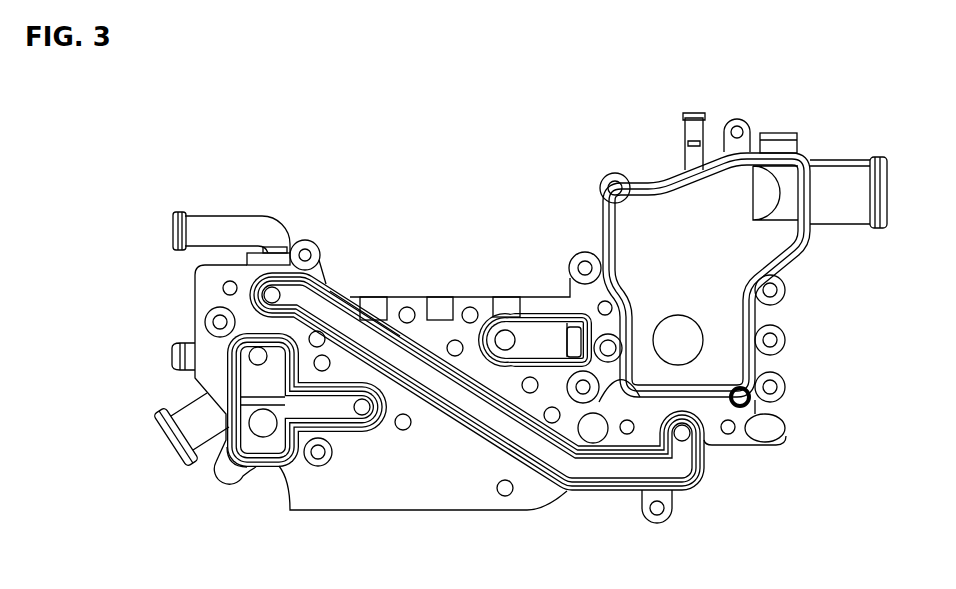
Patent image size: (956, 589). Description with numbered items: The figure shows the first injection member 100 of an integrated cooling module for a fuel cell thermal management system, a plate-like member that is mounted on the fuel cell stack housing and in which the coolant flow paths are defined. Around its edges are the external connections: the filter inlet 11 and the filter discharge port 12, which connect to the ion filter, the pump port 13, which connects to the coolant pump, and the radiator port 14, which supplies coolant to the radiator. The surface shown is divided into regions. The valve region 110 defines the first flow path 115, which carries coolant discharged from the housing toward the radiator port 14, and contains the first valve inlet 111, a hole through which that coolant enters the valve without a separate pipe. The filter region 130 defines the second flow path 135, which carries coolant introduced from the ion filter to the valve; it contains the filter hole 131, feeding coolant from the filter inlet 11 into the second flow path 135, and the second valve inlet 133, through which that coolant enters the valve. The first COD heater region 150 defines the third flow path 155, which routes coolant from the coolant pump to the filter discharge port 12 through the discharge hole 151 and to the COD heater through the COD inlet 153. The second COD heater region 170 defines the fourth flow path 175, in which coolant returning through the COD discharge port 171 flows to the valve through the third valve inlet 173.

The filter inlet 11 is at (222, 228).
The filter discharge port 12 is at (172, 350).
The pump port 13 is at (185, 460).
The radiator port 14 is at (857, 170).
The first injection member 100 is at (810, 100).
The valve region 110 is at (613, 236).
The first valve inlet 111 is at (684, 338).
The first flow path 115 is at (647, 227).
The filter region 130 is at (327, 290).
The filter hole 131 is at (272, 290).
The second valve inlet 133 is at (684, 432).
The second flow path 135 is at (362, 335).
The first COD heater region 150 is at (276, 462).
The discharge hole 151 is at (257, 356).
The COD inlet 153 is at (370, 425).
The third flow path 155 is at (253, 476).
The second COD heater region 170 is at (500, 332).
The COD discharge port 171 is at (503, 338).
The third valve inlet 173 is at (572, 338).
The fourth flow path 175 is at (537, 343).